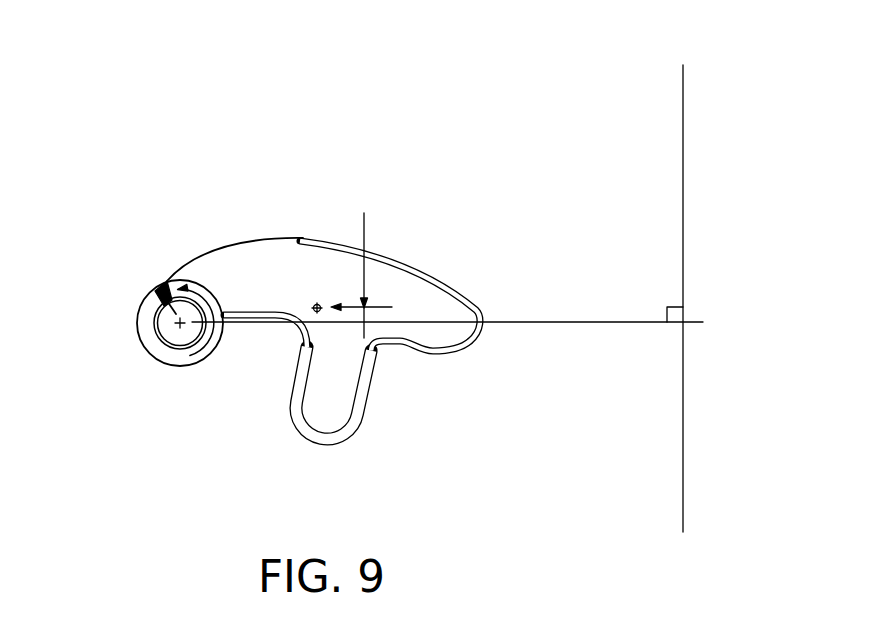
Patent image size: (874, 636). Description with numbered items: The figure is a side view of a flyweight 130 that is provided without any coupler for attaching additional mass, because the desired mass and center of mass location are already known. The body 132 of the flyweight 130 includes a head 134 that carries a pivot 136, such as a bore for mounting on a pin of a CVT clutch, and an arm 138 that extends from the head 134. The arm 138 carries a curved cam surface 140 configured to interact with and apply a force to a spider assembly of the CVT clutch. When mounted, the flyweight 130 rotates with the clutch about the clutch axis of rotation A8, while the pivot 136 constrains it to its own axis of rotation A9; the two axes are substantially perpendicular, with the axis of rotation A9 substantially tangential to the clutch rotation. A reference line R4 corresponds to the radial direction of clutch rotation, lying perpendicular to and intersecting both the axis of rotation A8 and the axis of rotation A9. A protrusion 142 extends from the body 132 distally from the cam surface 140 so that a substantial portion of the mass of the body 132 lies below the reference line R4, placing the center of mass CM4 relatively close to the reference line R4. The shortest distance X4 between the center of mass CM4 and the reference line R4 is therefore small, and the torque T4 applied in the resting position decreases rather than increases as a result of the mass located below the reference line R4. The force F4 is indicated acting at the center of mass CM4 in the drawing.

The flyweight 130 is at (291, 319).
The body 132 is at (277, 262).
The head 134 is at (122, 337).
The pivot 136 is at (152, 285).
The arm 138 is at (420, 346).
The cam surface 140 is at (390, 291).
The protrusion 142 is at (333, 393).
The axis of rotation of the flyweight A9 is at (168, 282).
The axis of rotation of the CVT clutch A8 is at (683, 188).
The center of mass CM4 is at (317, 303).
The shortest distance X4 is at (369, 255).
The force F4 is at (392, 307).
The reference line R4 is at (558, 322).
The torque T4 is at (190, 355).